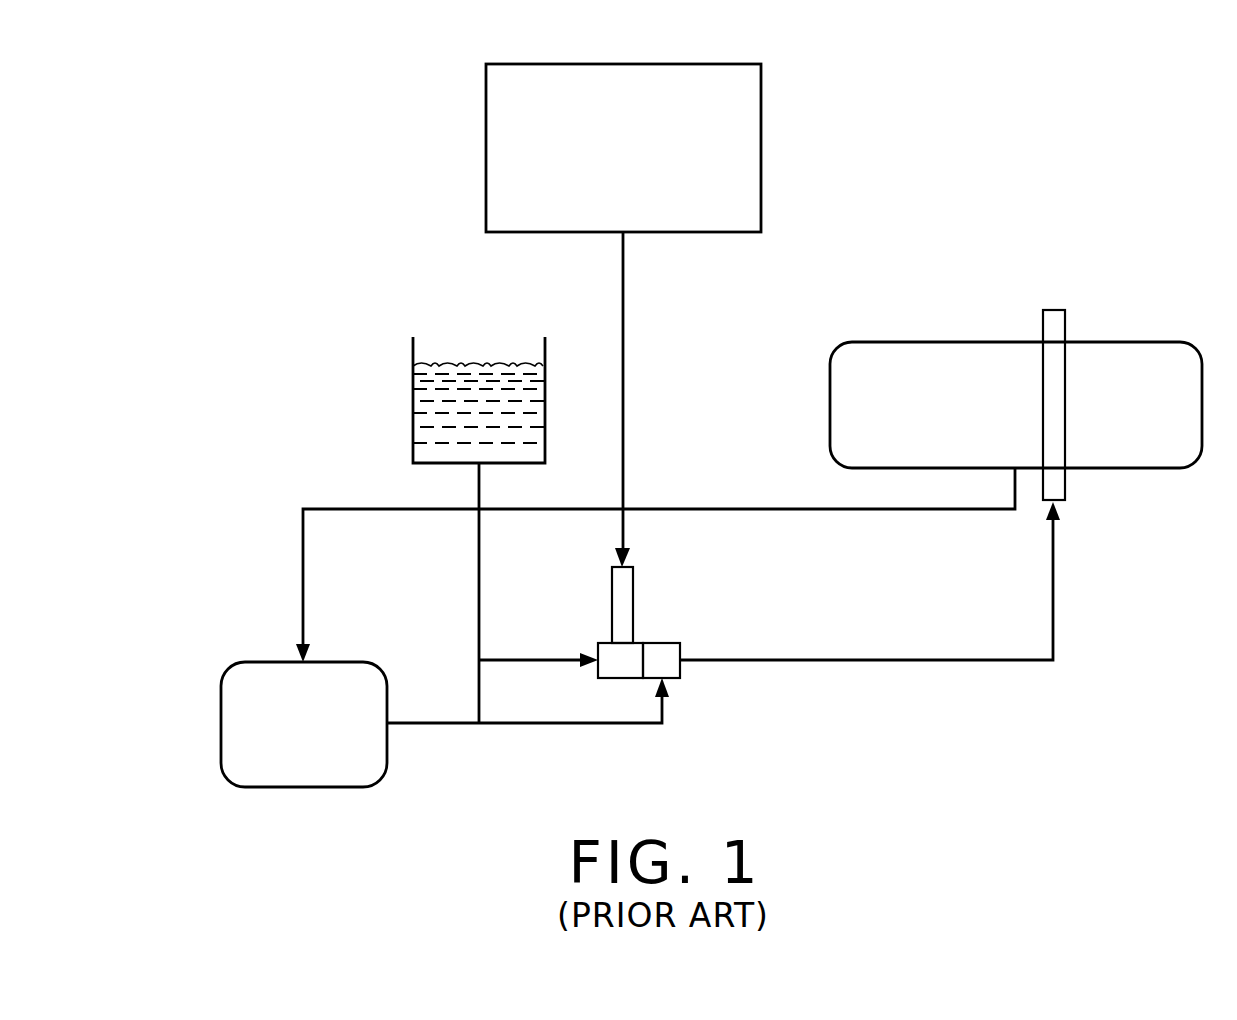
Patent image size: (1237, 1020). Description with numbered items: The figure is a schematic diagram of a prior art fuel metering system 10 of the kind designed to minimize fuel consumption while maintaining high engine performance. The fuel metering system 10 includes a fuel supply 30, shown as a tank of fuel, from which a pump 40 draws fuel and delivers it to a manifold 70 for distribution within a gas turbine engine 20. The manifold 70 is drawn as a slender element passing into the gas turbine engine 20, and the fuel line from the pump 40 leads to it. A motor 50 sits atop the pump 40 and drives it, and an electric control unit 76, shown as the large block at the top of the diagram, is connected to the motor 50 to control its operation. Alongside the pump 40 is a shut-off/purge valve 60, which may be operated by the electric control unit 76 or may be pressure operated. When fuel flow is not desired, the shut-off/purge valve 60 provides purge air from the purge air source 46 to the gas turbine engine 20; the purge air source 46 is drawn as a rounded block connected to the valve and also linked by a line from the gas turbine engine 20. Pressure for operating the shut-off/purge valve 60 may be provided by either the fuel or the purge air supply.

The fuel metering system 10 is at (278, 90).
The gas turbine engine 20 is at (933, 412).
The fuel supply 30 is at (413, 440).
The pump 40 is at (598, 650).
The purge air source 46 is at (320, 733).
The motor 50 is at (633, 590).
The shut-off/purge valve 60 is at (662, 643).
The manifold 70 is at (1053, 310).
The electric control unit 76 is at (643, 162).